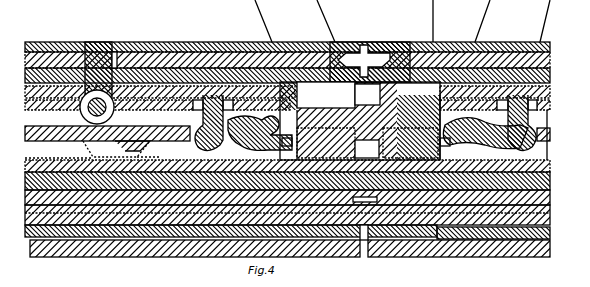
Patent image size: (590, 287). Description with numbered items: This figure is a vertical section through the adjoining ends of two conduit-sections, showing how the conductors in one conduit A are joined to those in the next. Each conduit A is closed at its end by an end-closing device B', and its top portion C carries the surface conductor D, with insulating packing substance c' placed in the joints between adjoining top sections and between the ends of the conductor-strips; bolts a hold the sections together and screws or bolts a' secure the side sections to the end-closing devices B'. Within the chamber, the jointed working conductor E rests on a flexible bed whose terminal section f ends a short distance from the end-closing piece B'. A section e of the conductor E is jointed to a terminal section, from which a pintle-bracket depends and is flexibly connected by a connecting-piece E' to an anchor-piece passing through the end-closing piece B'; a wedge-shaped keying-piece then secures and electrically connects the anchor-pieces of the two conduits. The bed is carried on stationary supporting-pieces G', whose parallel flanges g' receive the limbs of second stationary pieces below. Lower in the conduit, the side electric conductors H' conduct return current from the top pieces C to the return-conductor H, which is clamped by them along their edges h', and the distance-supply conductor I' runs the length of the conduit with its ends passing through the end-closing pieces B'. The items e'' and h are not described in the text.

The conduit A is at (295, 143).
The lower casing body A' is at (18, 167).
The surface conductor D is at (52, 43).
The insulating packing substance c' is at (70, 47).
The bolt a is at (295, 143).
The plug screw or bolt a' is at (295, 143).
The top portion C is at (181, 52).
The section of jointed conductor e is at (295, 143).
The port e'' is at (533, 111).
The terminal section of bed f is at (80, 108).
The jointed working conductor E is at (295, 143).
The connecting-piece E' is at (295, 143).
The end-closing device B' is at (295, 143).
The stationary supporting-piece G' is at (295, 143).
The parallel flange g' is at (87, 149).
The distance-supply conductor I' is at (295, 143).
The return-conductor H is at (295, 143).
The side electric conductor H' is at (295, 143).
The port h is at (380, 253).
The edge h' is at (365, 246).